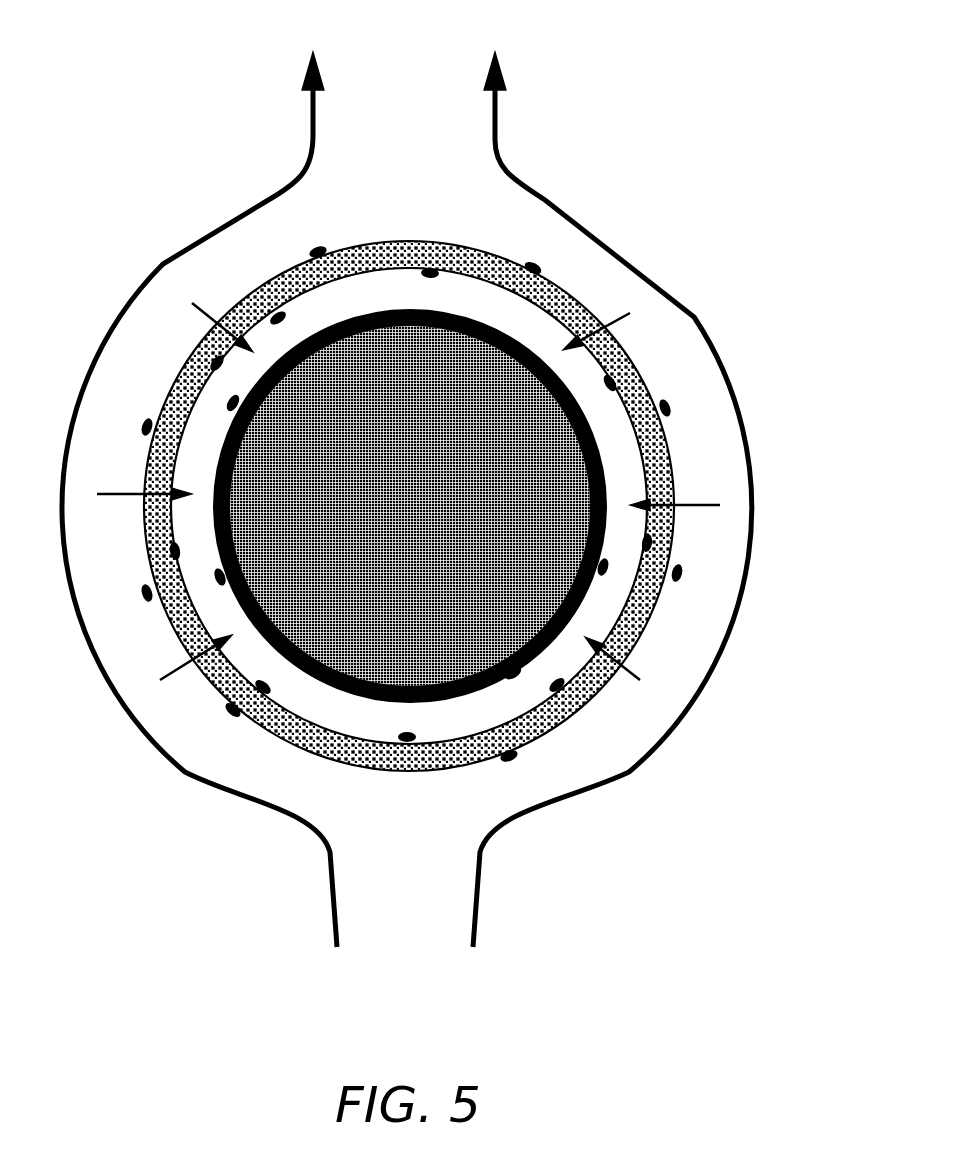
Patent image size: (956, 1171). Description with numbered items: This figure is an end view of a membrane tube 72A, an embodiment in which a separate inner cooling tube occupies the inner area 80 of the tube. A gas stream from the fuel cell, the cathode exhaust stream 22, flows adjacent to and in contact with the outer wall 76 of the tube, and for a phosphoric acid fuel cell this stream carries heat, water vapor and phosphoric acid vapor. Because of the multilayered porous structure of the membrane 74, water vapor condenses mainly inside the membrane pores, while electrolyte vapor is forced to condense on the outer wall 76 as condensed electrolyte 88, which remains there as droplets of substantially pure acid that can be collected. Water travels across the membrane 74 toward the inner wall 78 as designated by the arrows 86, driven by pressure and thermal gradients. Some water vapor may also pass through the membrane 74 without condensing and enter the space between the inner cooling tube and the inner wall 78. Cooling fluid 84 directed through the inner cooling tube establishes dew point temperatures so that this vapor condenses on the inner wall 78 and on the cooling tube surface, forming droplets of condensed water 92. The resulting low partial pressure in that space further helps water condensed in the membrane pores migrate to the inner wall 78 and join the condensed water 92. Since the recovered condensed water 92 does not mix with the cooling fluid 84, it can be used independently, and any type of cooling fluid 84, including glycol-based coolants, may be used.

The membrane tube 72A is at (428, 480).
The cathode exhaust stream 22 is at (165, 264).
The membrane 74 is at (390, 258).
The outer wall 76 is at (418, 243).
The inner wall 78 is at (468, 277).
The inner area 80 is at (436, 524).
The cooling fluid 84 is at (362, 635).
The arrows 86 is at (706, 505).
The condensed electrolyte 88 is at (318, 250).
The condensed water 92 is at (233, 404).